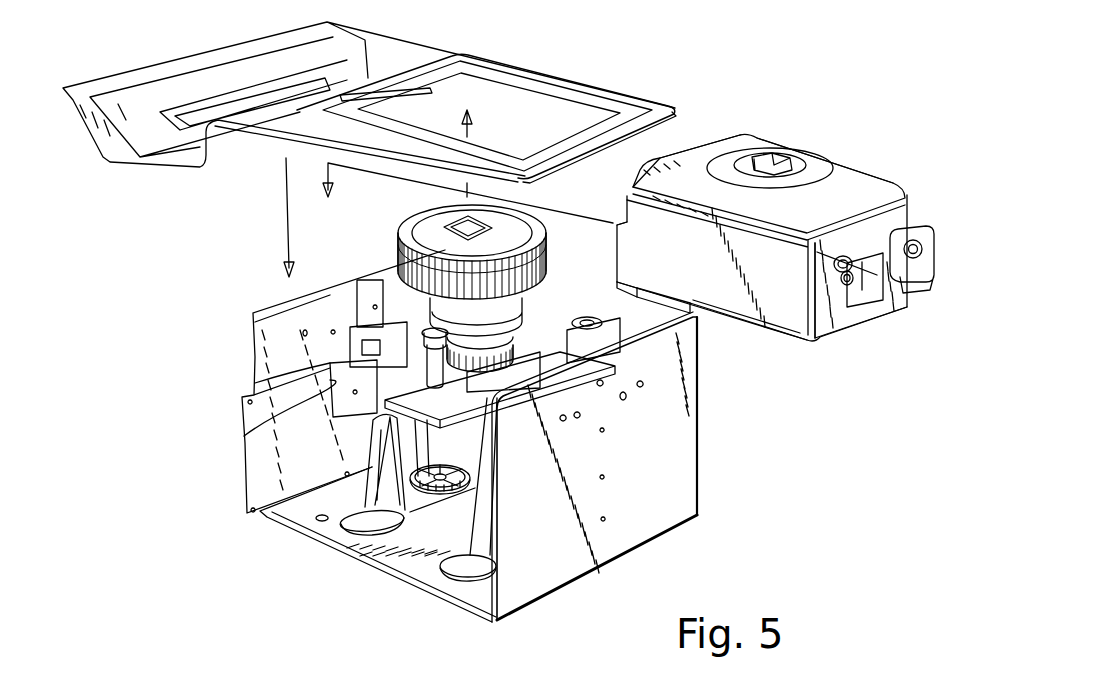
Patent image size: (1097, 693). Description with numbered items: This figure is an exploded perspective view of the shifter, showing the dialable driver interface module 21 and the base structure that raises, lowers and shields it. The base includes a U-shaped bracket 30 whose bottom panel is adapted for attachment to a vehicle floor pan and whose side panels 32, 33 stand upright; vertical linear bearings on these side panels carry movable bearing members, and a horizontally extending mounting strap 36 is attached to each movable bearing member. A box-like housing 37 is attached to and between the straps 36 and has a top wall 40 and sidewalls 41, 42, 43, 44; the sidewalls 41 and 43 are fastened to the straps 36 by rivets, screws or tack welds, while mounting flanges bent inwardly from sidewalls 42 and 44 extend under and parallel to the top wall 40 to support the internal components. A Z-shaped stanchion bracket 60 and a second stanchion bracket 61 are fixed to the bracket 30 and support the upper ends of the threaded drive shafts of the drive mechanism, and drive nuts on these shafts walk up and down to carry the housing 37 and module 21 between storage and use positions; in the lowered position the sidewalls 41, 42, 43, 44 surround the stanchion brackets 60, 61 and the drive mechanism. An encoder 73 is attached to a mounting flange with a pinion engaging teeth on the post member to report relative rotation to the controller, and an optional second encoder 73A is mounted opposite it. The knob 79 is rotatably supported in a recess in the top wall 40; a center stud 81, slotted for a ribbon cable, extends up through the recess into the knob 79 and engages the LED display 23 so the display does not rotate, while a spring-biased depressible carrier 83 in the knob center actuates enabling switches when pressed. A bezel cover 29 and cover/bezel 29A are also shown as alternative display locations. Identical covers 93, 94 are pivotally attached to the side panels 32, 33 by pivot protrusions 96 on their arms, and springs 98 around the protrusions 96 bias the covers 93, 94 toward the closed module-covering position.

The driver interface module 21 is at (392, 250).
The LED display 23 is at (480, 223).
The bezel cover 29 is at (153, 64).
The cover/bezel 29A is at (523, 147).
The U-shaped bracket 30 is at (460, 613).
The side panel 32 is at (543, 580).
The side panel 33 is at (254, 359).
The mounting strap 36 is at (244, 436).
The box-like housing 37 is at (845, 162).
The top wall 40 is at (740, 141).
The sidewall 41 is at (876, 225).
The sidewall 42 is at (783, 213).
The sidewall 43 is at (702, 157).
The sidewall 44 is at (865, 170).
The Z-shaped stanchion bracket 60 is at (350, 533).
The second stanchion bracket 61 is at (443, 578).
The encoder 73 is at (420, 327).
The second encoder 73A is at (513, 305).
The knob 79 is at (425, 231).
The center stud 81 is at (787, 160).
The depressible carrier 83 is at (433, 220).
The cover 93 is at (692, 277).
The cover 94 is at (921, 289).
The pivot protrusion 96 is at (926, 250).
The spring 98 is at (918, 243).